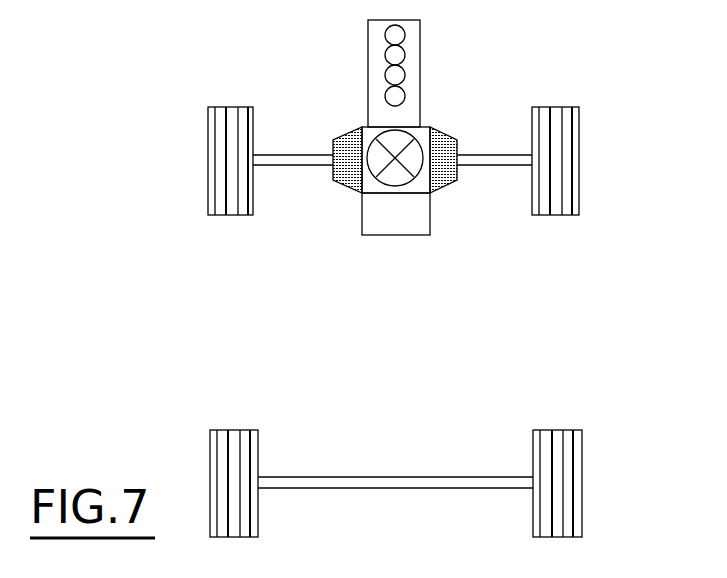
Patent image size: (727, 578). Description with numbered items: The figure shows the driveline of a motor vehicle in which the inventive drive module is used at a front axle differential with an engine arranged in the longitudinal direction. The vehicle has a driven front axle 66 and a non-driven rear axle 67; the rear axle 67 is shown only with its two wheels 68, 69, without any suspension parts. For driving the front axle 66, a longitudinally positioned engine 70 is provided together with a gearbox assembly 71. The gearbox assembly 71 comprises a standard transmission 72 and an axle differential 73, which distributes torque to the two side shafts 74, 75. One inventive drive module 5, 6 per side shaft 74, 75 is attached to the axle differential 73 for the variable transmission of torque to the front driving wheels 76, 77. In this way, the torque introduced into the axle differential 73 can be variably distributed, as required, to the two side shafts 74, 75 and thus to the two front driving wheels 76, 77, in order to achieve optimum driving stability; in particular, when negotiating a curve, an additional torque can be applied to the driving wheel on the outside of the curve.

The drive module 5 is at (347, 142).
The drive module 6 is at (445, 137).
The front axle 66 is at (597, 161).
The rear axle 67 is at (603, 482).
The wheel 68 is at (229, 440).
The wheel 69 is at (552, 440).
The engine 70 is at (422, 43).
The gearbox assembly 71 is at (463, 200).
The standard transmission 72 is at (422, 226).
The axle differential 73 is at (387, 182).
The side shaft 74 is at (277, 154).
The side shaft 75 is at (498, 154).
The front driving wheel 76 is at (220, 110).
The front driving wheel 77 is at (563, 112).